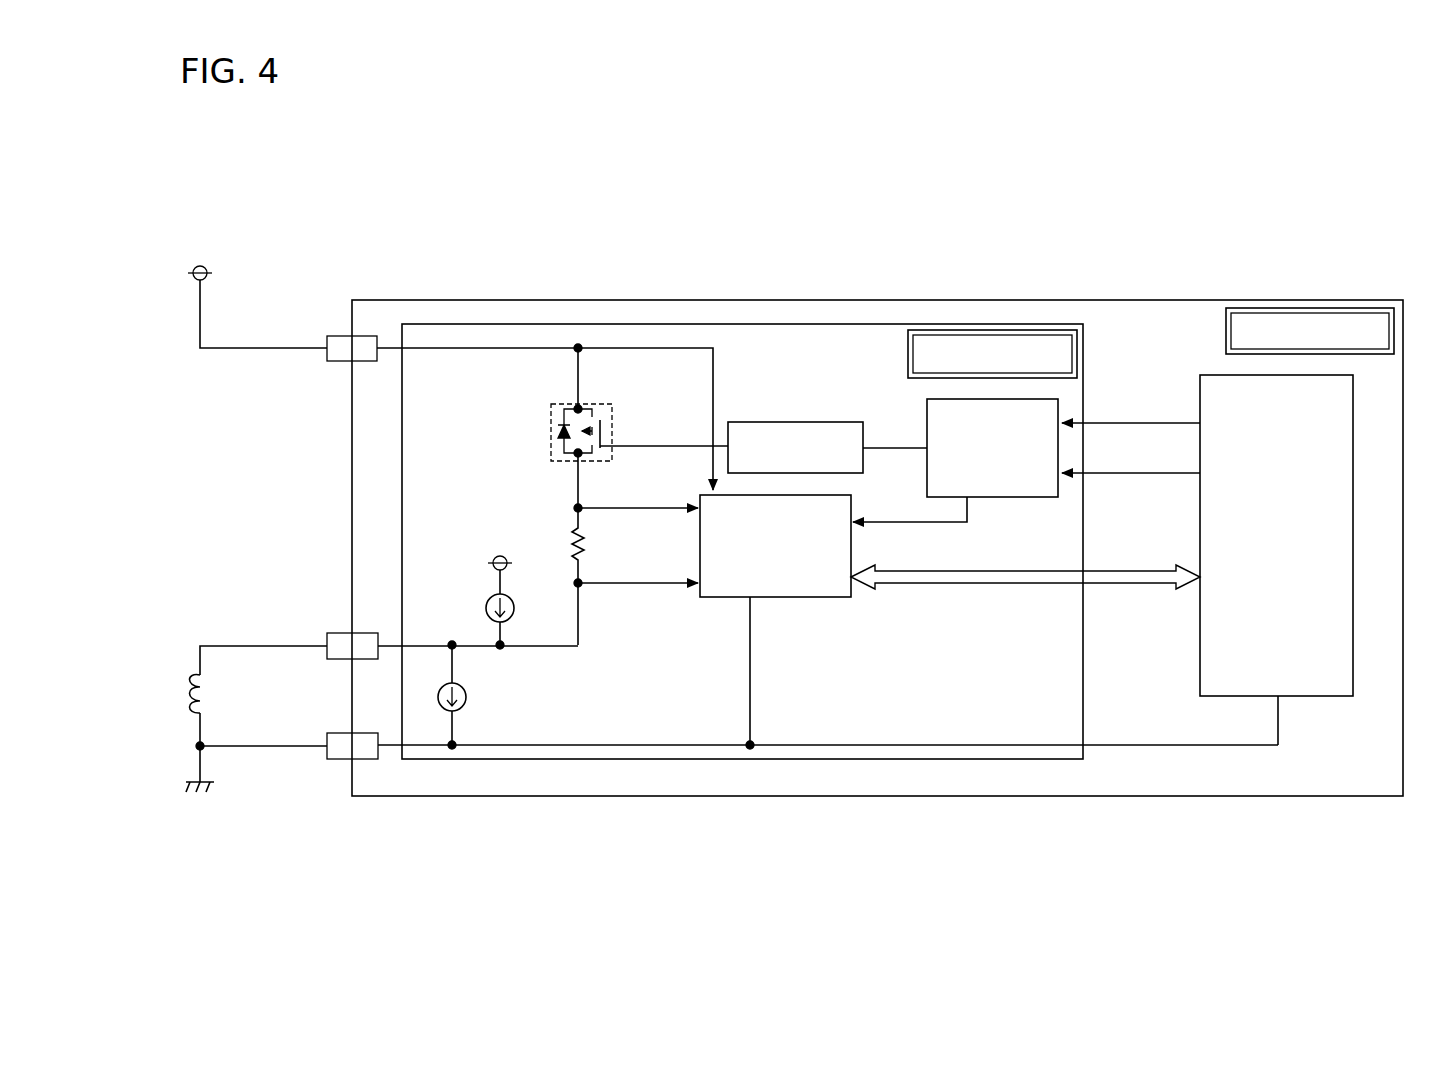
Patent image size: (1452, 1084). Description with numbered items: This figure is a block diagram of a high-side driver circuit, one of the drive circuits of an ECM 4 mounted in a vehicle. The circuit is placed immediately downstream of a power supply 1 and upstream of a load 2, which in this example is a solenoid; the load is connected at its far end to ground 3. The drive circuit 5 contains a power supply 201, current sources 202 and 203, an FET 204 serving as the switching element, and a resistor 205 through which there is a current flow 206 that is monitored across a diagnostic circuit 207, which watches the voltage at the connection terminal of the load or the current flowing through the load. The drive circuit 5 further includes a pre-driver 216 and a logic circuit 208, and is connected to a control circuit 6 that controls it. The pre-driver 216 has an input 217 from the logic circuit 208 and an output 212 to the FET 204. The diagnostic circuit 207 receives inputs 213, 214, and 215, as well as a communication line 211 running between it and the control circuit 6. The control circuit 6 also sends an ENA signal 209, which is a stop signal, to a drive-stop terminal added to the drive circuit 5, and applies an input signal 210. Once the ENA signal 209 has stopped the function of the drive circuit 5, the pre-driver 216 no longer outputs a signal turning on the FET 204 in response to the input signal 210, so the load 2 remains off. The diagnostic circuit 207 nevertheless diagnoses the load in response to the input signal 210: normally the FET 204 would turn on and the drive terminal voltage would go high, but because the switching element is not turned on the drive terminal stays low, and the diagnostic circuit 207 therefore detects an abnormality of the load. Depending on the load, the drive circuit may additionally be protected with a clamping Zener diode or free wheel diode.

The power supply 1 is at (194, 270).
The load 2 is at (196, 680).
The ground 3 is at (198, 782).
The ECM 4 is at (1310, 302).
The drive circuit 5 is at (1001, 330).
The control circuit 6 is at (1355, 500).
The power supply 201 is at (497, 557).
The current source 202 is at (488, 605).
The current source 203 is at (468, 695).
The FET 204 is at (549, 432).
The resistor 205 is at (572, 538).
The current flow 206 is at (598, 556).
The diagnostic circuit 207 is at (800, 598).
The logic circuit 208 is at (1059, 403).
The ENA signal 209 is at (1150, 402).
The input signal 210 is at (1143, 480).
The communication line 211 is at (1010, 613).
The output 212 is at (620, 446).
The input 213 is at (648, 347).
The input 214 is at (637, 512).
The input 215 is at (968, 512).
The pre-driver 216 is at (778, 422).
The input 217 is at (878, 448).